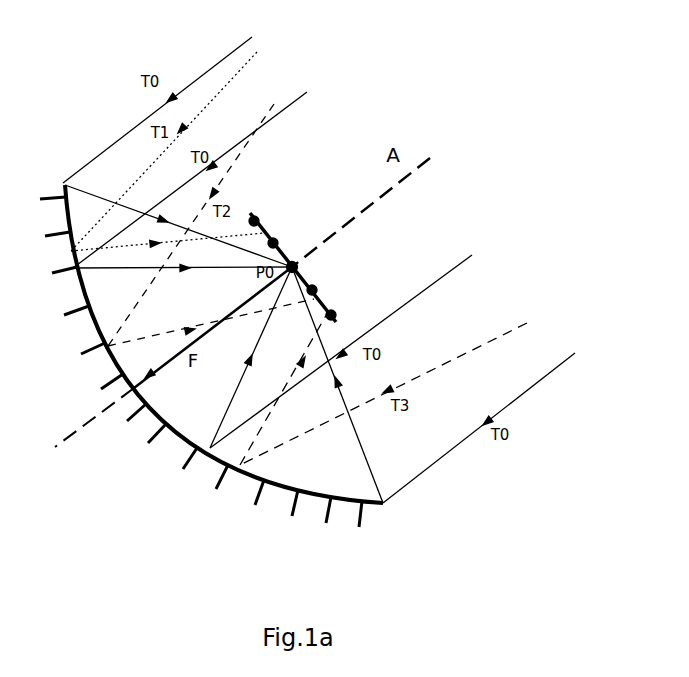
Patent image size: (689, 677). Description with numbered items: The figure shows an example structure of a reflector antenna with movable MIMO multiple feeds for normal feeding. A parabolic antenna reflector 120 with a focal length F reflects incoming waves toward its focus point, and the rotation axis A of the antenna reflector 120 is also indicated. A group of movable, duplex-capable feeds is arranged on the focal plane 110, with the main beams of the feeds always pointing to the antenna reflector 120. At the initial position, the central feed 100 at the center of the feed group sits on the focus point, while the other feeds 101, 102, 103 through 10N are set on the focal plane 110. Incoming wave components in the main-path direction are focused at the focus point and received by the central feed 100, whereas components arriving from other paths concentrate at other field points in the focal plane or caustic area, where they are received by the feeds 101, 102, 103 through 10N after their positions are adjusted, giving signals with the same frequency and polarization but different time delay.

The central feed 100 is at (293, 265).
The feed 101 is at (275, 242).
The feed 102 is at (313, 289).
The feed 103 is at (334, 314).
The feed 10N is at (258, 216).
The focal plane 110 is at (323, 303).
The parabolic antenna reflector 120 is at (160, 420).